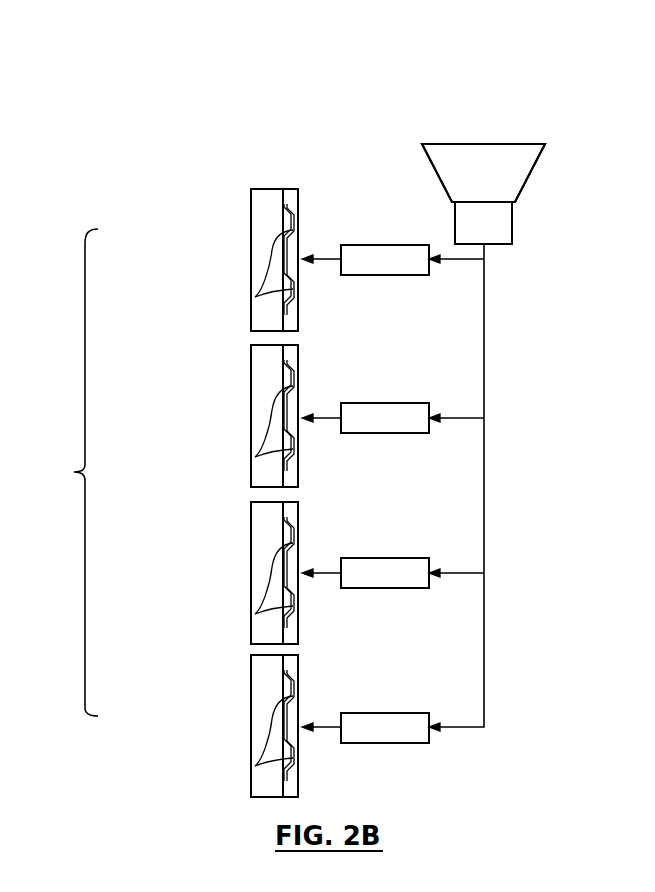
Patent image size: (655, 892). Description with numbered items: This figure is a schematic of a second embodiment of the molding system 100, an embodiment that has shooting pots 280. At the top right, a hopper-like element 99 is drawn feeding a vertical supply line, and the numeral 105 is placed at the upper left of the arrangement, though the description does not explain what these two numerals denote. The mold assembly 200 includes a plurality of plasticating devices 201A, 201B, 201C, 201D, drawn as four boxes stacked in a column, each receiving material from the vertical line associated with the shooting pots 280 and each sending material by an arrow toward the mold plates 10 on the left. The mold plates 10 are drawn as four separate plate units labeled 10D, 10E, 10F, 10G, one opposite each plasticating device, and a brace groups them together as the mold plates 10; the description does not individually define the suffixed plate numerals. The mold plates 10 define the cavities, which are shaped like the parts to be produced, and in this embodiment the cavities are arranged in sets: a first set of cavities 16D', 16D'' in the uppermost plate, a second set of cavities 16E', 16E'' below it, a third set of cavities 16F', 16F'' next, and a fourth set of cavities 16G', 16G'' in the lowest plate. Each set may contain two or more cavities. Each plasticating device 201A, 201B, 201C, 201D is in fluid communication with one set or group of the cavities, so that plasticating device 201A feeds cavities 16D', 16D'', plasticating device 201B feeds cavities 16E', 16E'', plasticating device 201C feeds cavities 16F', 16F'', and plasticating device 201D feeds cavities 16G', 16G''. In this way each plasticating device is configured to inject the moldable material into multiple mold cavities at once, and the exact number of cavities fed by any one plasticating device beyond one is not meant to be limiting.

The molding system 100 is at (566, 88).
The light beam / illuminator 99 is at (524, 144).
The optical system 105 is at (291, 88).
The mold assembly 200 is at (360, 150).
The plasticating device 201A is at (381, 245).
The plasticating device 201B is at (381, 403).
The plasticating device 201C is at (381, 558).
The plasticating device 201D is at (381, 713).
The shooting pots 280 is at (518, 703).
The mold plates 10 is at (71, 472).
The mirror segment 10D is at (251, 245).
The mirror segment 10E is at (251, 392).
The mirror segment 10F is at (251, 542).
The mirror segment 10G is at (251, 698).
The cavity 16D' is at (207, 271).
The cavity 16D'' is at (236, 300).
The cavity 16E' is at (207, 429).
The cavity 16E'' is at (236, 460).
The cavity 16F' is at (207, 586).
The cavity 16F'' is at (236, 617).
The cavity 16G' is at (207, 738).
The cavity 16G'' is at (236, 769).